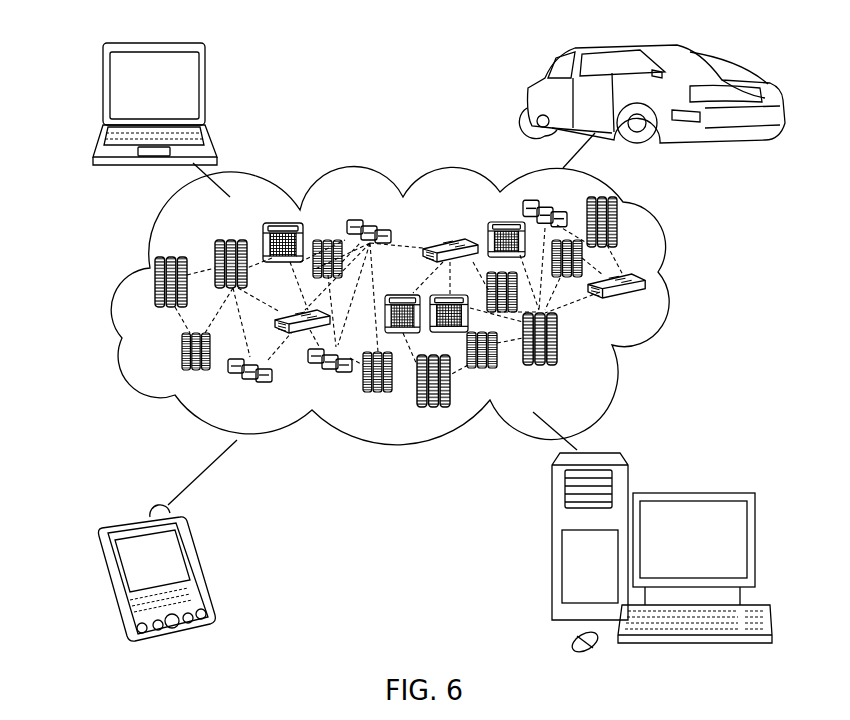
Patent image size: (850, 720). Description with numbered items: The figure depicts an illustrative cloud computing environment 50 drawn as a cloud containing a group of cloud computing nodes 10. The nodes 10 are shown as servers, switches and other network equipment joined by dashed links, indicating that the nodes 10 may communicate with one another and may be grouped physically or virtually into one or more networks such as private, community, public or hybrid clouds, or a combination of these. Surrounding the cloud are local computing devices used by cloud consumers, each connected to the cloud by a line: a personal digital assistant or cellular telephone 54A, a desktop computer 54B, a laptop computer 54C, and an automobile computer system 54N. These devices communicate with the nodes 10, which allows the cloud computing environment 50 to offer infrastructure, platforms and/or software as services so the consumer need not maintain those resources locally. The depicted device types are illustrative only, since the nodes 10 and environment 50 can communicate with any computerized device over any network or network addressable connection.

The cloud computing nodes 10 is at (650, 308).
The cloud computing environment 50 is at (690, 284).
The personal digital assistant or cellular telephone 54A is at (203, 565).
The desktop computer 54B is at (689, 492).
The laptop computer 54C is at (205, 88).
The automobile computer system 54N is at (527, 98).